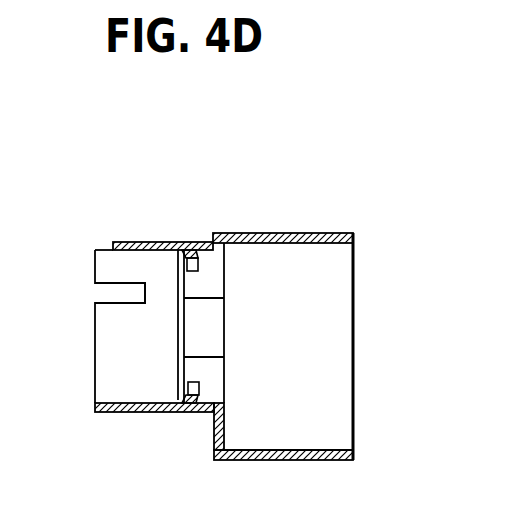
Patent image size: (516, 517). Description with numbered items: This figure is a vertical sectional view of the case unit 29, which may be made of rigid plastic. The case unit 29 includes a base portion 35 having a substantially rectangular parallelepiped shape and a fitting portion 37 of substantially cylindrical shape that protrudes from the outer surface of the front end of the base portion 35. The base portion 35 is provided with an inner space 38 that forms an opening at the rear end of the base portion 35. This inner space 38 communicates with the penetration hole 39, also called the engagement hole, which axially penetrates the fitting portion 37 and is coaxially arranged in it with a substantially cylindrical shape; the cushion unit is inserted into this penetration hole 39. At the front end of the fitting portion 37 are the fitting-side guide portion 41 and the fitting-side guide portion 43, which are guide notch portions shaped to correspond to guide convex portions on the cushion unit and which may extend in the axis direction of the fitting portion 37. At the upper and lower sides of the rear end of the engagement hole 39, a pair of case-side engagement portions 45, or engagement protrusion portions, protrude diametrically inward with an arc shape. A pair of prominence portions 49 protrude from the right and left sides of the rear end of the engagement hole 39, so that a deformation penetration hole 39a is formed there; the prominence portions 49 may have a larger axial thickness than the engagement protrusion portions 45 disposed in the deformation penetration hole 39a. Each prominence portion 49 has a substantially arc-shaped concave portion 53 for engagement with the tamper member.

The case unit 29 is at (362, 172).
The base portion 35 is at (307, 450).
The fitting portion 37 is at (145, 410).
The inner space 38 is at (340, 318).
The penetration hole 39 is at (105, 362).
The deformation penetration hole 39a is at (213, 378).
The fitting-side guide portion 41 is at (100, 242).
The fitting-side guide portion 43 is at (102, 293).
The case-side engagement portion 45 is at (193, 242).
The prominence portion 49 is at (215, 278).
The concave portion 53 is at (213, 331).